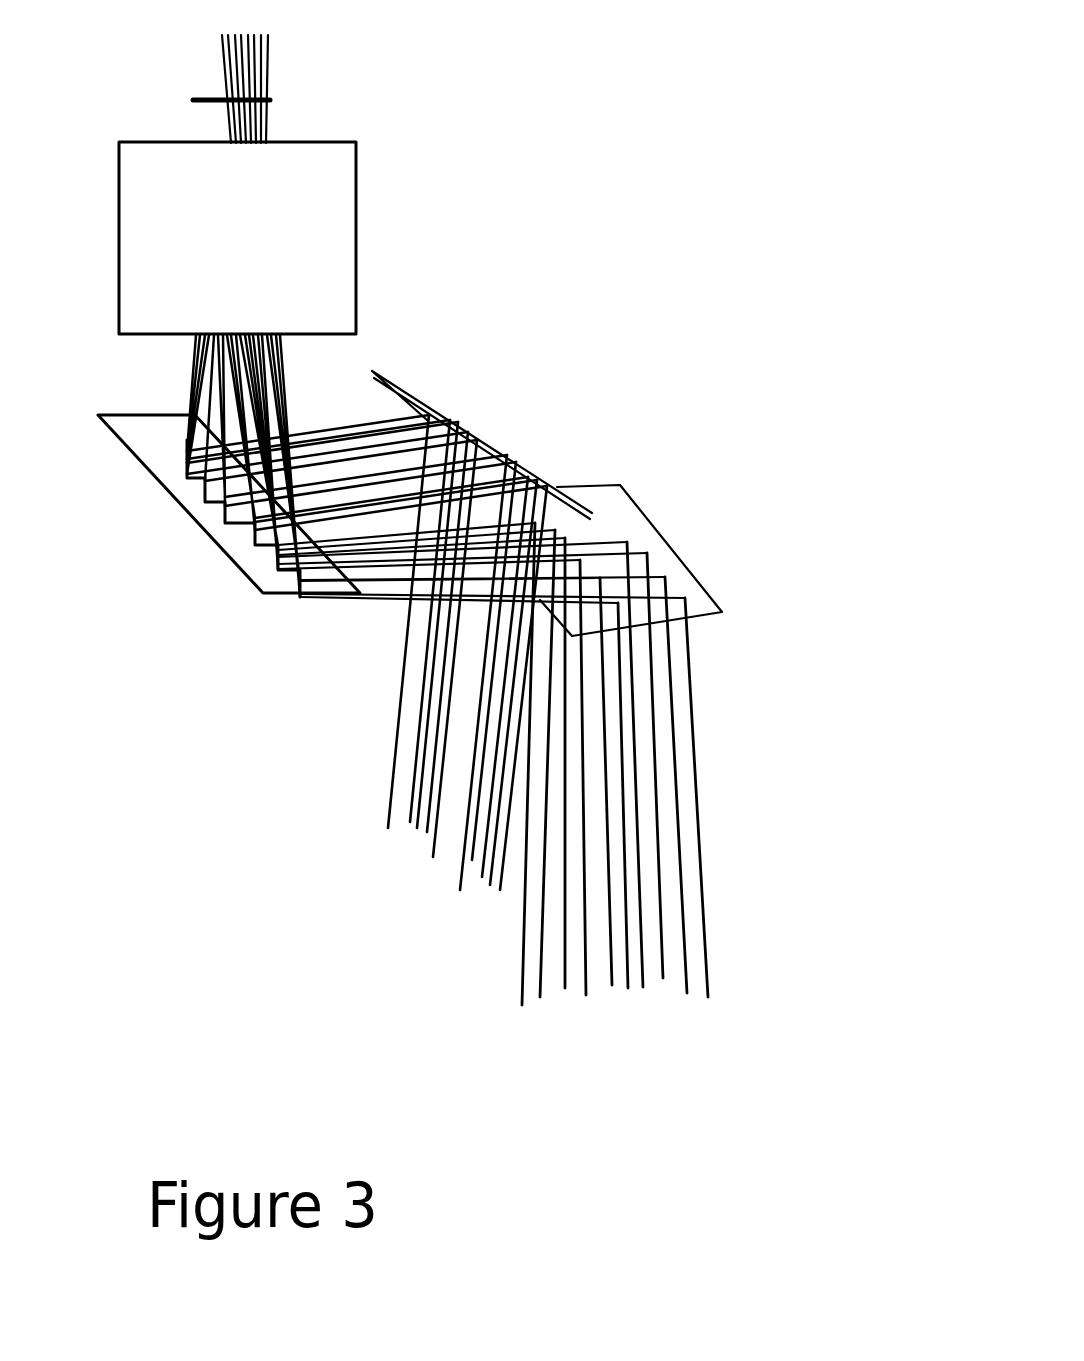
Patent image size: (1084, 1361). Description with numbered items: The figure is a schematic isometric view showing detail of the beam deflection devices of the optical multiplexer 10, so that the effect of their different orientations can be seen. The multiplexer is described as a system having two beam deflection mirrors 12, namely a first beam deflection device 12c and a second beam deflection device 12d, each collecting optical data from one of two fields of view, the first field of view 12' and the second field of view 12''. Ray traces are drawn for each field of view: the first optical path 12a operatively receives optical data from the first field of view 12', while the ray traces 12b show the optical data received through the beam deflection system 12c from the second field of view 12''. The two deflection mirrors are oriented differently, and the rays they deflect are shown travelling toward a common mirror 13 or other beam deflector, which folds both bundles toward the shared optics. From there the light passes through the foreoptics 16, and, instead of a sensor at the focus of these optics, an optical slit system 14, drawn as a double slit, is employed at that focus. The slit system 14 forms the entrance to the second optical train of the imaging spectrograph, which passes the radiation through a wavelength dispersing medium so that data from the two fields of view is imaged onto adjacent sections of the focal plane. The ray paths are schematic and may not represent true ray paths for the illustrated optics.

The optical multiplexer 10 is at (743, 258).
The beam deflection mirrors 12 is at (570, 721).
The first optical path 12a is at (733, 765).
The ray traces for second field of view 12b is at (395, 765).
The beam deflection system 12c is at (530, 435).
The beam deflection device 12d is at (680, 540).
The first field of view 12' is at (649, 1061).
The second field of view 12'' is at (415, 1060).
The common mirror 13 is at (207, 530).
The optical slit system 14 is at (272, 101).
The foreoptics 16 is at (237, 238).